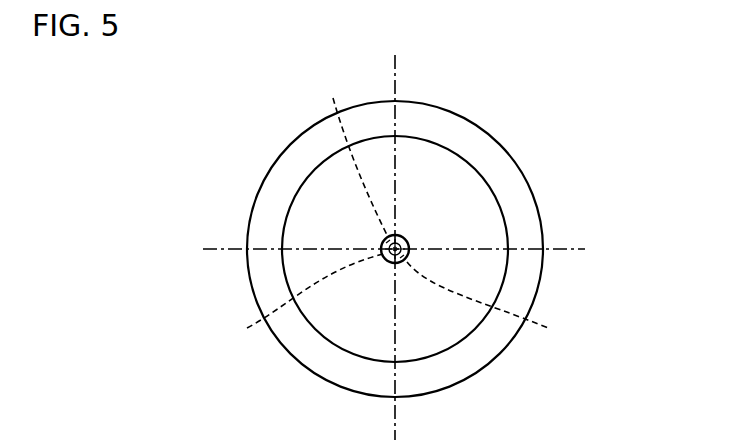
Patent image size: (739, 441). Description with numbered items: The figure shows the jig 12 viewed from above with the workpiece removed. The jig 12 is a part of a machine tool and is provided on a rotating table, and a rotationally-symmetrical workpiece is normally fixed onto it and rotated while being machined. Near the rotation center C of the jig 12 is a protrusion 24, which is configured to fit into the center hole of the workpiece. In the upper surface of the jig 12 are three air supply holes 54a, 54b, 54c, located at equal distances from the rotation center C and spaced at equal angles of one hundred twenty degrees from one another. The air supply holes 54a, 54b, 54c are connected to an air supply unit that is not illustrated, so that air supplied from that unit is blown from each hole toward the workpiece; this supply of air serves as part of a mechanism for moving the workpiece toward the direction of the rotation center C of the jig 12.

The jig 12 is at (518, 187).
The protrusion 24 is at (410, 247).
The air supply hole 54a is at (347, 154).
The air supply hole 54b is at (291, 298).
The air supply hole 54c is at (502, 305).
The rotation center C is at (382, 243).